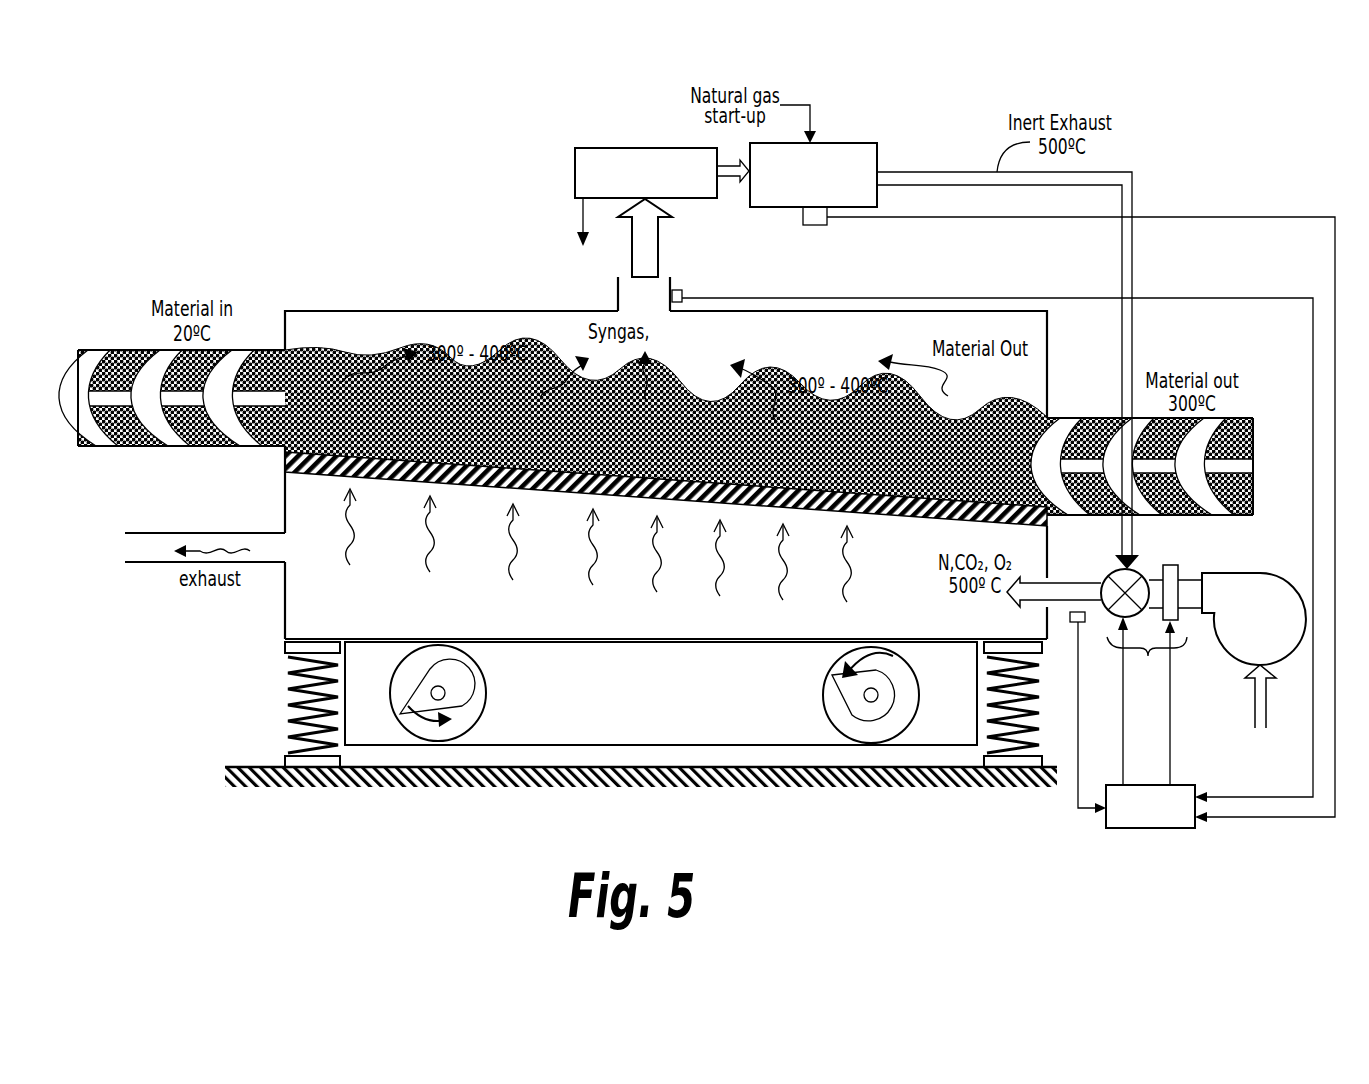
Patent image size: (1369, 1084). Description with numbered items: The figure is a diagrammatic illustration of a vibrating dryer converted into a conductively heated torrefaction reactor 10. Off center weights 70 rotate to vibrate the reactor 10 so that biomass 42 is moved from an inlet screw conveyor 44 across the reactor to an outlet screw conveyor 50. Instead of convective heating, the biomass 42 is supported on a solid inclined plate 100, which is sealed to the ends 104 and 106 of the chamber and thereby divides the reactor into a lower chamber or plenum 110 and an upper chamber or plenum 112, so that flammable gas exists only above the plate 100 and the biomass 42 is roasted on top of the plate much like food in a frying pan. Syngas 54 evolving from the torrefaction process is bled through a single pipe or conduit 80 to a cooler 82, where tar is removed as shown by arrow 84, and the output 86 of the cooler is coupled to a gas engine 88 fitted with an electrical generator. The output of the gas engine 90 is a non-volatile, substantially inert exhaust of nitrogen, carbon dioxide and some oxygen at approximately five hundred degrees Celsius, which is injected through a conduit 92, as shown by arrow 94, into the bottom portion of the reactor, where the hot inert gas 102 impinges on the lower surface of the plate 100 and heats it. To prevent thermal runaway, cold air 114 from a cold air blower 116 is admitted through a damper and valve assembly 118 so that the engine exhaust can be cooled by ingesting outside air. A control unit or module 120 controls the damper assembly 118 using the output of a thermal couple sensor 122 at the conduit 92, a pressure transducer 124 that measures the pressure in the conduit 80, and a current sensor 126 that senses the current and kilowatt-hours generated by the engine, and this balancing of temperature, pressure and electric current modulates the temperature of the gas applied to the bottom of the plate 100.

The reactor 10 is at (436, 270).
The biomass 42 is at (336, 358).
The screw conveyor 44 is at (178, 450).
The screw conveyor 50 is at (1175, 515).
The syngas 54 is at (663, 377).
The off center weights 70 is at (472, 687).
The pipe or conduit 80 is at (617, 298).
The cooler 82 is at (640, 148).
The tar removal 84 is at (583, 213).
The output of the cooler 86 is at (737, 178).
The gas engine 88 is at (838, 143).
The output of the gas engine 90 is at (908, 172).
The conduit 92 is at (1063, 577).
The arrow 94 is at (1090, 612).
The solid plate 100 is at (405, 486).
The hot inert gas 102 is at (352, 557).
The end of chamber 104 is at (284, 512).
The end of chamber 106 is at (1050, 557).
The lower chamber or plenum 110 is at (360, 622).
The upper chamber or plenum 112 is at (694, 345).
The cold air 114 is at (1262, 723).
The cold air blower 116 is at (1262, 582).
The damper and valve assembly 118 is at (1174, 675).
The control unit or module 120 is at (1155, 828).
The thermal couple sensor 122 is at (1070, 617).
The pressure transducer 124 is at (682, 296).
The current sensor 126 is at (815, 226).